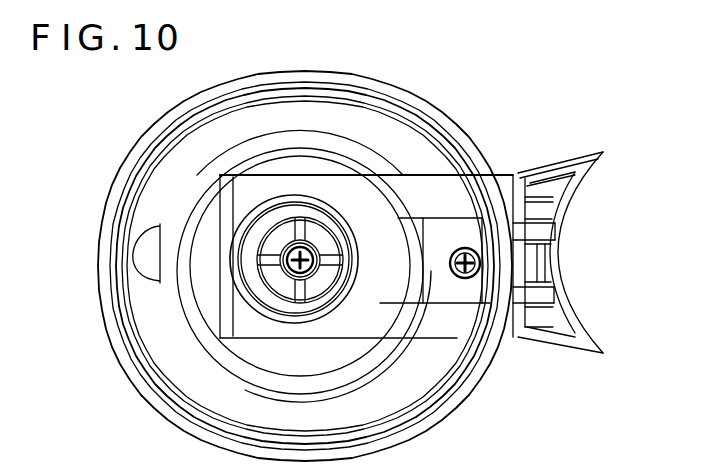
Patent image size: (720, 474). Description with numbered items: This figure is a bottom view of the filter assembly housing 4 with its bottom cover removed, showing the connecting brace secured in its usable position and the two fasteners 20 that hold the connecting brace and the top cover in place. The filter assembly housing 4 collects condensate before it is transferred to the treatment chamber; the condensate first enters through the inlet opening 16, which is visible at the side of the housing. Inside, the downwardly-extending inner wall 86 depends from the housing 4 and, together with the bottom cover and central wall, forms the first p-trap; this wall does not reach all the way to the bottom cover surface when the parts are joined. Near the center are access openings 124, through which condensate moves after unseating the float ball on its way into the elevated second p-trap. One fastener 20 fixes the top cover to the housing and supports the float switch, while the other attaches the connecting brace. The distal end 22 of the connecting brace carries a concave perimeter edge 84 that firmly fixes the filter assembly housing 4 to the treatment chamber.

The filter assembly housing 4 is at (109, 368).
The inlet opening 16 is at (121, 247).
The fasteners 20 is at (332, 242).
The distal end 22 is at (602, 176).
The concave perimeter edge 84 is at (587, 276).
The downwardly-extending inner wall 86 is at (305, 125).
The access openings 124 is at (304, 308).